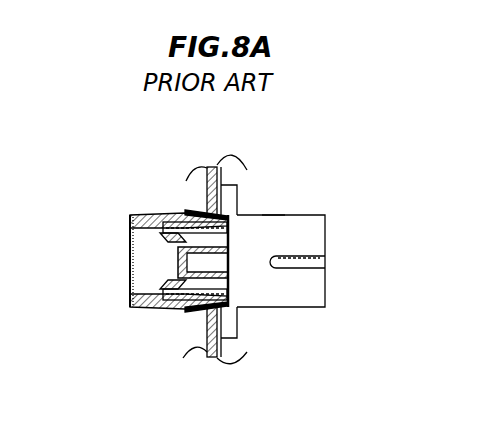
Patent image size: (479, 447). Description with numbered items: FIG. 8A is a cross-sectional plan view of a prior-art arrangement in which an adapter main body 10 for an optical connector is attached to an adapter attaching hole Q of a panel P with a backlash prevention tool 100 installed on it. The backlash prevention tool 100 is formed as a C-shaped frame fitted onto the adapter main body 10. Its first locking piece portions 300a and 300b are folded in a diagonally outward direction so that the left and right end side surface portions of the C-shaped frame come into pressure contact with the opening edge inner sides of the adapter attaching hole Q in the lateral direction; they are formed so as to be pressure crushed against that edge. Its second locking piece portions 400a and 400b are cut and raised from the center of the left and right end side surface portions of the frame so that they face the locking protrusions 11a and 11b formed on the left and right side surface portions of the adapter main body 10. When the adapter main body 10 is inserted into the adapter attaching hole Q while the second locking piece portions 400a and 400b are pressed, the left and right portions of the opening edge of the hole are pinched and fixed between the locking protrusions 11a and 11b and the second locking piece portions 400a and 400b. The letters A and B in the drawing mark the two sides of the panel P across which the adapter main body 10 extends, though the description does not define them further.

The panel P is at (203, 186).
The adapter main body 10 is at (337, 215).
The locking protrusion 11a is at (240, 185).
The locking protrusion 11b is at (240, 336).
The adapter attaching hole Q is at (270, 215).
The pin terminal B is at (327, 250).
The backlash prevention tool 100 is at (163, 308).
The second locking piece portion 400a is at (198, 212).
The second locking piece portion 400b is at (178, 310).
The first locking piece portion 300a is at (200, 208).
The first locking piece portion 300b is at (190, 314).
The plug side A is at (130, 263).